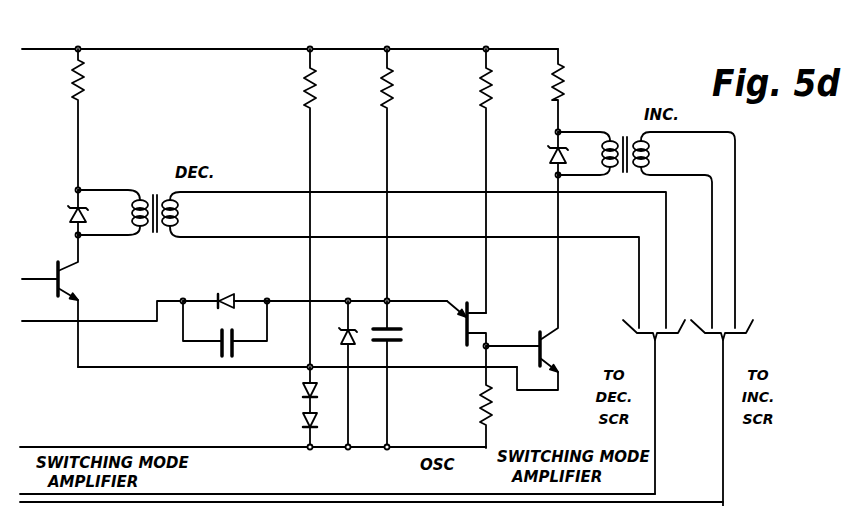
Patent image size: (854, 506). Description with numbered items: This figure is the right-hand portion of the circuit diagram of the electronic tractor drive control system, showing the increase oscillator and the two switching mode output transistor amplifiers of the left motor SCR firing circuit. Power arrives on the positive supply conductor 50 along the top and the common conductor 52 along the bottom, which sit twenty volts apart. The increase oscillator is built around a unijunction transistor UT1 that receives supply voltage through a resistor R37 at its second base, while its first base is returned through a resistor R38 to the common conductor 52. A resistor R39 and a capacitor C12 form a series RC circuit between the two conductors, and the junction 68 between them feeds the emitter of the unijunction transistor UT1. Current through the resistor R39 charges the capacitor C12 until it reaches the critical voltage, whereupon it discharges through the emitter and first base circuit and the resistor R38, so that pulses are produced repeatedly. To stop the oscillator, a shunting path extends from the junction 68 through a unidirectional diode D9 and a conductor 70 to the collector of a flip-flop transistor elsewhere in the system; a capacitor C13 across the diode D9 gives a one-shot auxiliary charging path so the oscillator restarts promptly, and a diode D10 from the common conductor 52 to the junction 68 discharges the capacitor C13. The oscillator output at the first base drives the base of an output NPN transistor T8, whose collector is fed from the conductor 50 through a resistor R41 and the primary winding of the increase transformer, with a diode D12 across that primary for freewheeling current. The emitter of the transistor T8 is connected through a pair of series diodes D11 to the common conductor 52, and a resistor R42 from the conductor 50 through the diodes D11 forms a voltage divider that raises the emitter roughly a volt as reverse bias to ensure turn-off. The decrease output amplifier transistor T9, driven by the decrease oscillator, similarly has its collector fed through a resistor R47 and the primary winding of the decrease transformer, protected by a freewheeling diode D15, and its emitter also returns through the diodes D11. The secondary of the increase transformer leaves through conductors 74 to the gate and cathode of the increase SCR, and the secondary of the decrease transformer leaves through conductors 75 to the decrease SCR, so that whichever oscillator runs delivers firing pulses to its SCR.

The supply conductor 50 is at (170, 49).
The resistor R47 is at (84, 89).
The resistor R42 is at (304, 89).
The resistor R39 is at (384, 89).
The resistor R37 is at (478, 89).
The resistor R41 is at (555, 88).
The diode D12 is at (548, 150).
The diode D15 is at (70, 210).
The output switching mode amplifier transistor T9 is at (65, 277).
The conductor 70 is at (30, 334).
The unidirectional diode D9 is at (224, 296).
The capacitor C13 is at (235, 355).
The junction 68 is at (388, 300).
The diode D10 is at (348, 329).
The capacitor C12 is at (403, 338).
The unijunction transistor UT1 is at (472, 323).
The output NPN transistor T8 is at (546, 346).
The pair of diodes D11 is at (300, 393).
The resistor R38 is at (480, 409).
The common conductor 52 is at (247, 448).
The conductors 75 is at (658, 412).
The conductors 74 is at (723, 447).